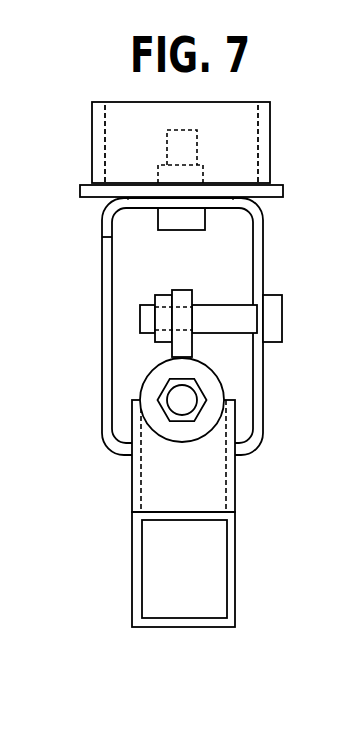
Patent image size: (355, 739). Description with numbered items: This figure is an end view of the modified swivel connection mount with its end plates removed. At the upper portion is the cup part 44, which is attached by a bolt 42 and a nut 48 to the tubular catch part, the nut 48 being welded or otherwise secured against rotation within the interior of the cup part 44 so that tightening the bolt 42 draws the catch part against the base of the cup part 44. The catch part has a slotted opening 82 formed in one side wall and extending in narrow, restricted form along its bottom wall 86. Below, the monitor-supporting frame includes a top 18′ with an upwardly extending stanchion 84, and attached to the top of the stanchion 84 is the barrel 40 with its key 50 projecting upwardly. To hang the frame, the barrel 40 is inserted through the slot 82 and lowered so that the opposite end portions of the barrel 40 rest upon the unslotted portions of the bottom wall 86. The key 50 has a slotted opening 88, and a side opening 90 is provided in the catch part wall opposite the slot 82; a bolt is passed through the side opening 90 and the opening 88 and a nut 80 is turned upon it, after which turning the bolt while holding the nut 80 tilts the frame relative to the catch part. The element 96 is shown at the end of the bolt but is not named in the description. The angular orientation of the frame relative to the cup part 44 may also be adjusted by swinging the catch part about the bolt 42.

The cup part 44 is at (92, 134).
The nut 48 is at (204, 172).
The slotted opening 82 is at (103, 272).
The bolt 42 is at (180, 230).
The nut 80 is at (157, 295).
The key 50 is at (188, 290).
The slotted opening 88 is at (184, 305).
The side opening 90 is at (256, 305).
The end cap 96 is at (283, 312).
The barrel 40 is at (223, 386).
The bottom wall 86 is at (158, 457).
The stanchion 84 is at (235, 470).
The top 18′ is at (132, 565).